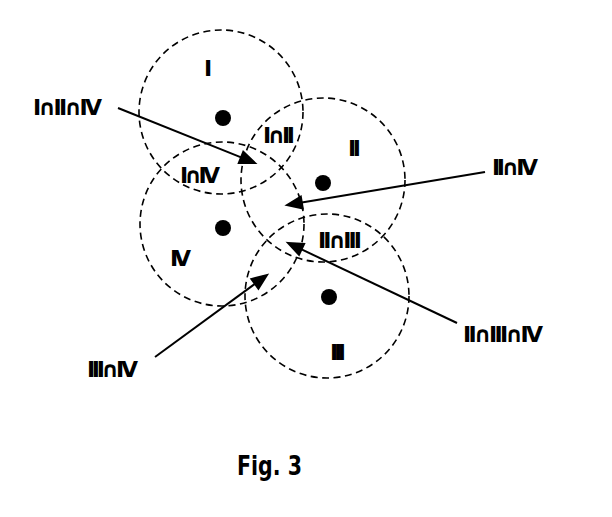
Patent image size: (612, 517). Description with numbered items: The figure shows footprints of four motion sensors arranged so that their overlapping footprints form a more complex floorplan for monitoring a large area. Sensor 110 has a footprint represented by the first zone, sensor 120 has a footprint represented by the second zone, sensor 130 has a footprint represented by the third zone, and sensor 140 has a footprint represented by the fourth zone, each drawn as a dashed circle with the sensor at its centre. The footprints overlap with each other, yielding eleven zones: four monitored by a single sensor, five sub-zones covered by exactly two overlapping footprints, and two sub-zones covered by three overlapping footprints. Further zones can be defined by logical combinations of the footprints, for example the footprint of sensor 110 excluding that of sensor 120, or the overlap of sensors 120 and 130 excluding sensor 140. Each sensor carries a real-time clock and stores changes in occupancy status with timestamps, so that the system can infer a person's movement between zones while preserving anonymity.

The motion sensor 110 is at (204, 109).
The motion sensor 120 is at (343, 174).
The motion sensor 130 is at (301, 306).
The motion sensor 140 is at (200, 227).